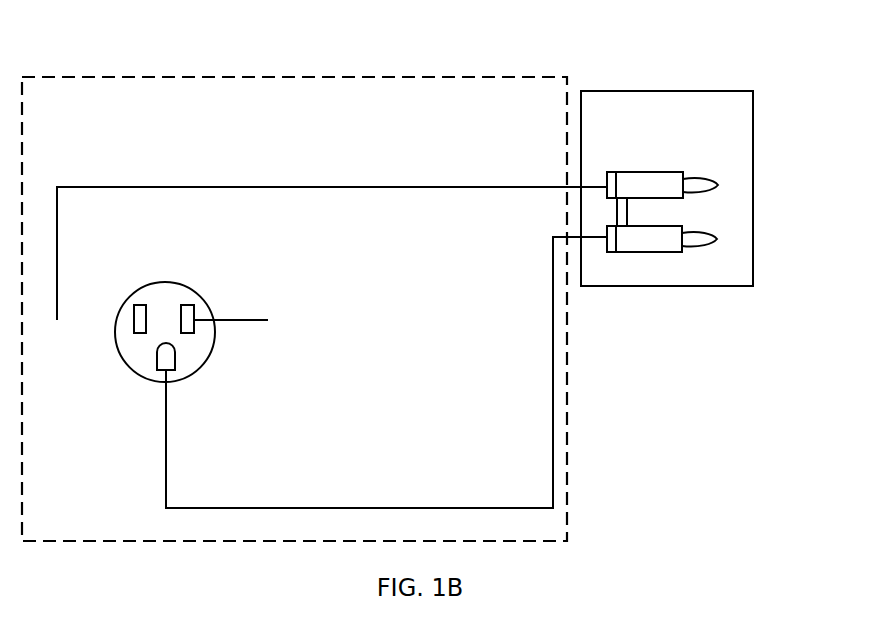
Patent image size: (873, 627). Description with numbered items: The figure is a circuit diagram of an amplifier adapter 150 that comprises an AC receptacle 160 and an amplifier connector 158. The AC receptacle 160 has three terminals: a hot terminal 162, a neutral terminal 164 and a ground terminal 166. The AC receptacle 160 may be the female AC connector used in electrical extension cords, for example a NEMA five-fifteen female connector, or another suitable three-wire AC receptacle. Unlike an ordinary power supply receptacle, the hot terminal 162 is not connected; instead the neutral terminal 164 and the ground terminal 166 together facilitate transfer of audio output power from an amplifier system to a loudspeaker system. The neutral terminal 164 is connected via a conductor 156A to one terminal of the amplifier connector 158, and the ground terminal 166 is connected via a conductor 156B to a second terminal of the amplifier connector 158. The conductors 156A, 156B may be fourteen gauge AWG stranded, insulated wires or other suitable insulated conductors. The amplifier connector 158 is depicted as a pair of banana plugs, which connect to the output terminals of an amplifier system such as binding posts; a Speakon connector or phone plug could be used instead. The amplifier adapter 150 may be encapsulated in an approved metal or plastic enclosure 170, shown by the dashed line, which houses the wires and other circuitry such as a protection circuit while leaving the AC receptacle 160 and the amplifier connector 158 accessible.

The amplifier adapter 150 is at (122, 48).
The conductor 156A is at (449, 187).
The conductor 156B is at (411, 507).
The amplifier connector 158 is at (714, 91).
The AC receptacle 160 is at (137, 363).
The hot terminal 162 is at (195, 316).
The neutral terminal 164 is at (140, 333).
The ground terminal 166 is at (170, 355).
The enclosure 170 is at (567, 472).